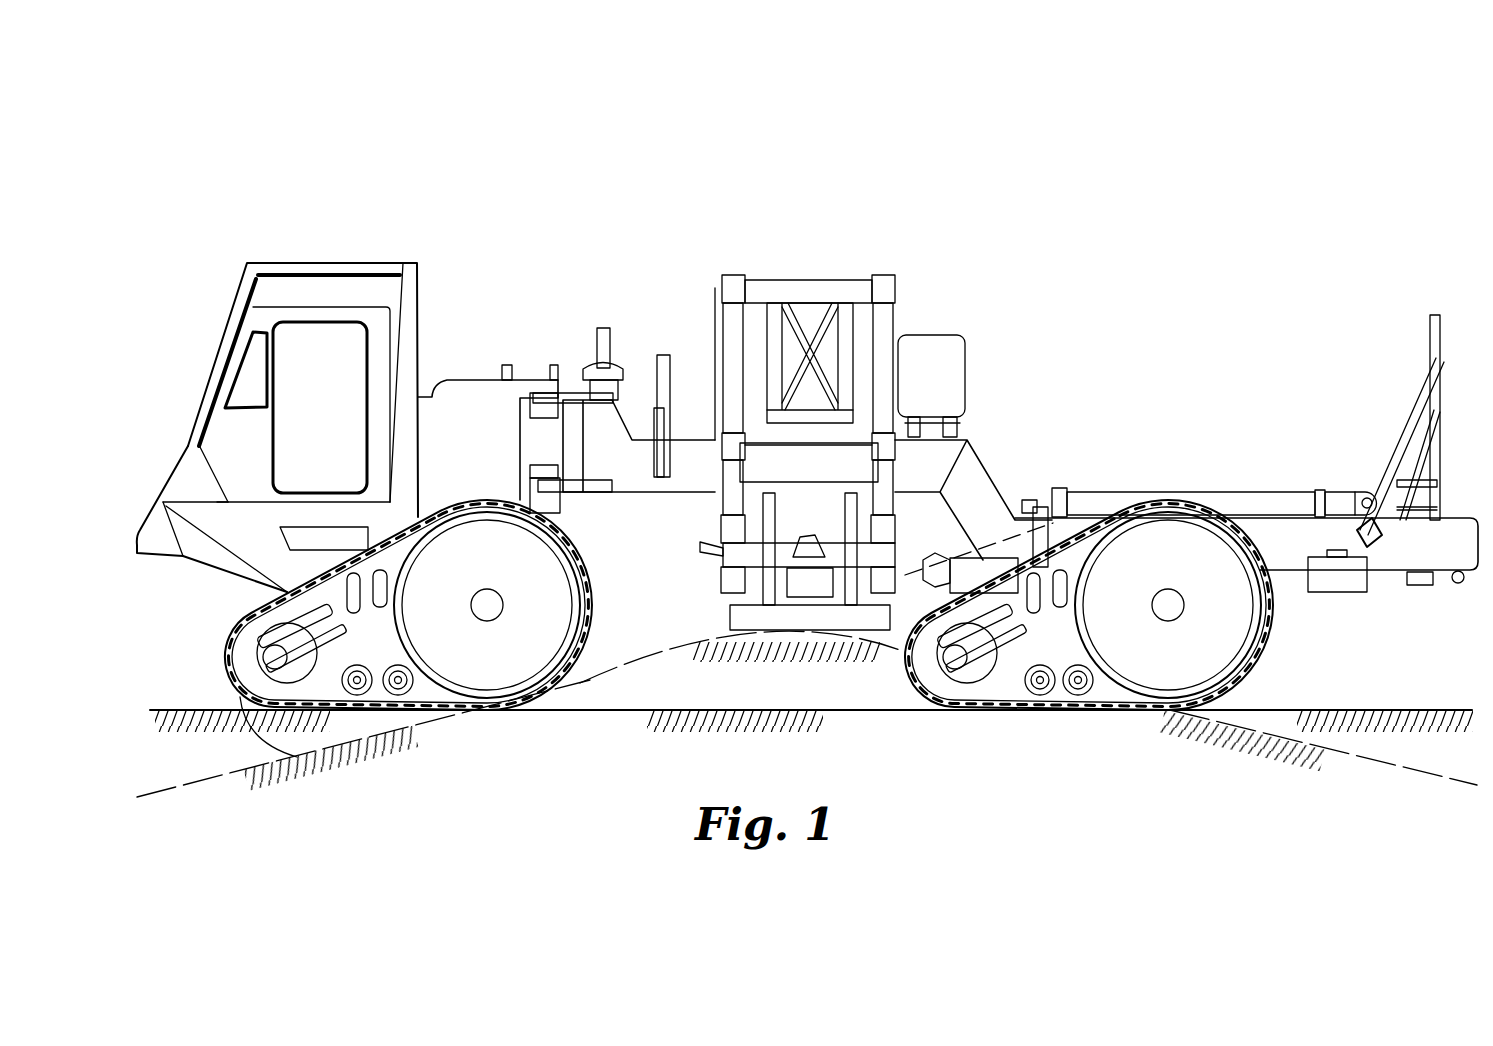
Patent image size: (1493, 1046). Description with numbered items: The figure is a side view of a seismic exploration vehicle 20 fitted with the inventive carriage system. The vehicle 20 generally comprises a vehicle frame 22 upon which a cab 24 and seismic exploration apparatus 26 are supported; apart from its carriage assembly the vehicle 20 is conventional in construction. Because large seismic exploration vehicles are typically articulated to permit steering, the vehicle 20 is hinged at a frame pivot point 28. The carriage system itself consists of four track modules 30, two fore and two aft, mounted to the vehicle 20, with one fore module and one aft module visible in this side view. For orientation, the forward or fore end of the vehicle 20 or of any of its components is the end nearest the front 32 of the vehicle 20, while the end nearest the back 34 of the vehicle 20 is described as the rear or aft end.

The seismic exploration vehicle 20 is at (631, 278).
The vehicle frame 22 is at (1280, 540).
The cab 24 is at (311, 261).
The seismic exploration apparatus 26 is at (822, 290).
The frame pivot point 28 is at (540, 352).
The track module 30 is at (1284, 639).
The front 32 is at (141, 527).
The back 34 is at (1470, 568).